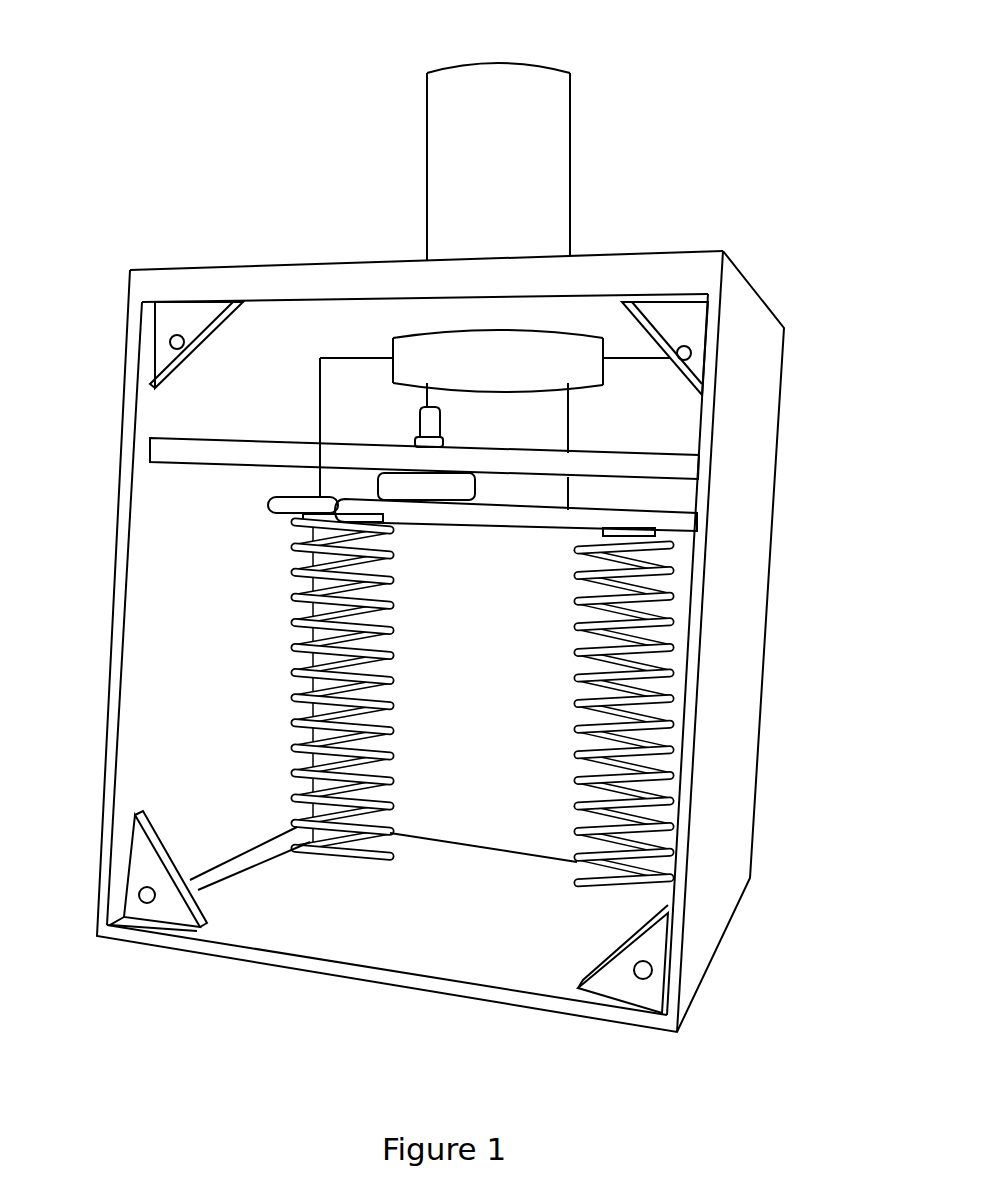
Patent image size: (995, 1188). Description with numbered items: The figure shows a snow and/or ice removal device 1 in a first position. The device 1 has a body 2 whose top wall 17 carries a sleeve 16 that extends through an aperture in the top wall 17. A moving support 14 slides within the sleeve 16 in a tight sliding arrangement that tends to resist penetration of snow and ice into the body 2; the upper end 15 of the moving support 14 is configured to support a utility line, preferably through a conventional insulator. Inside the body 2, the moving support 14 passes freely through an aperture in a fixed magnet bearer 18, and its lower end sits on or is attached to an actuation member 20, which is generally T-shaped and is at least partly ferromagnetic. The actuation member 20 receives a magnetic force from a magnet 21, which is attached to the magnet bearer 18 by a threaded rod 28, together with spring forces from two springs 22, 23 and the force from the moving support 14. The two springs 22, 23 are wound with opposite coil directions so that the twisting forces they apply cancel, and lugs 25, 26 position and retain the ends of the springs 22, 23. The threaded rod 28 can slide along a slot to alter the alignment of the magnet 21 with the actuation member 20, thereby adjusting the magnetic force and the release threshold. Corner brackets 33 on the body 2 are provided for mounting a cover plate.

The snow and/or ice removal device 1 is at (692, 151).
The body 2 is at (740, 296).
The moving support 14 is at (500, 155).
The upper end 15 is at (508, 62).
The sleeve 16 is at (500, 355).
The top wall 17 is at (306, 280).
The fixed magnet bearer 18 is at (655, 466).
The actuation member 20 is at (615, 512).
The magnet 21 is at (413, 490).
The spring 22 is at (337, 700).
The spring 23 is at (628, 778).
The lug 25 is at (592, 863).
The lug 26 is at (290, 528).
The threaded rod 28 is at (430, 423).
The corner brackets 33 is at (177, 326).